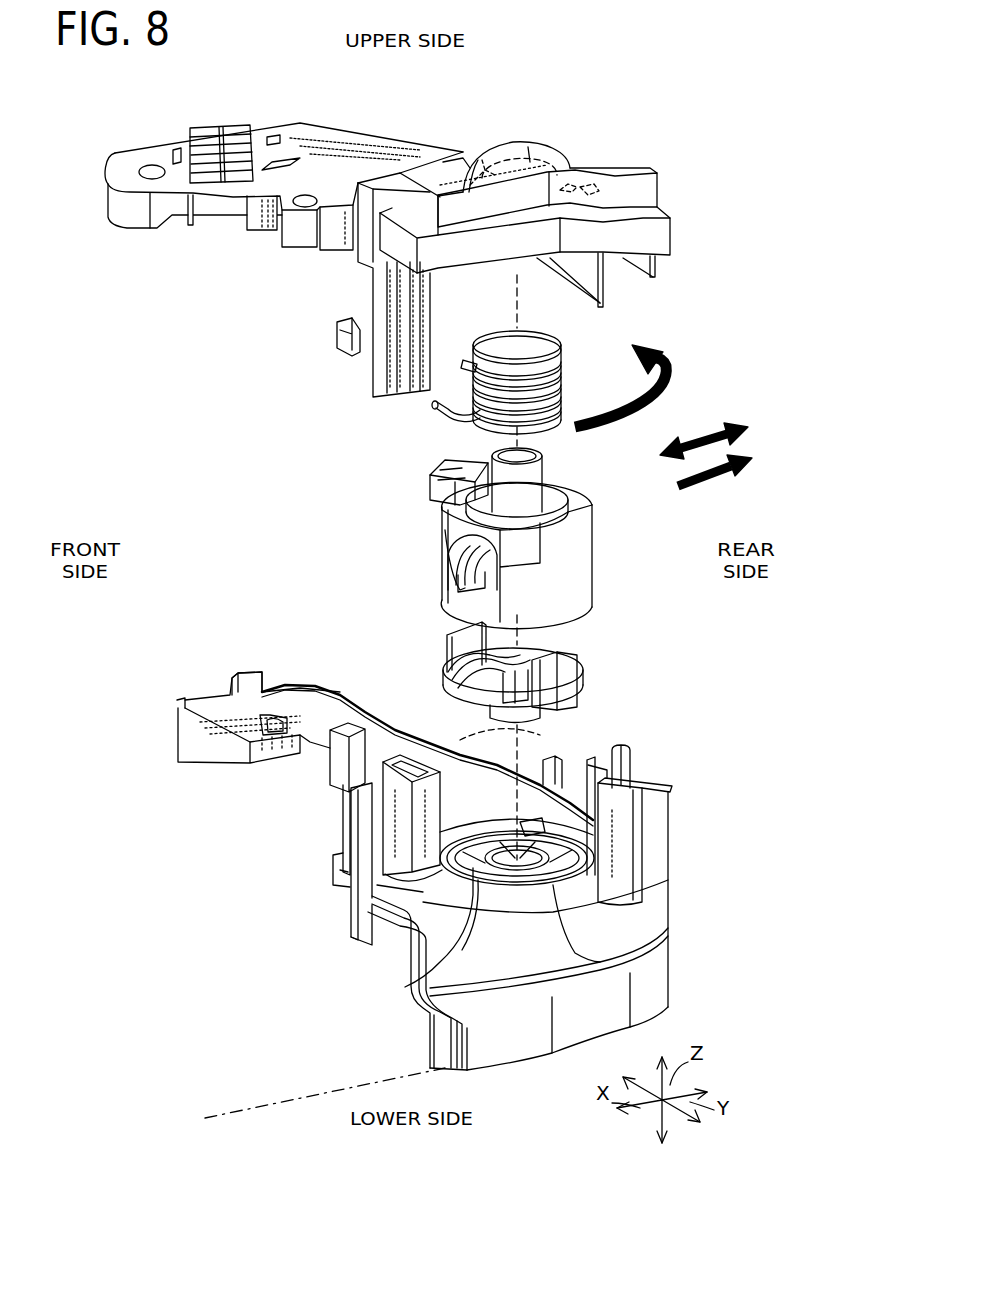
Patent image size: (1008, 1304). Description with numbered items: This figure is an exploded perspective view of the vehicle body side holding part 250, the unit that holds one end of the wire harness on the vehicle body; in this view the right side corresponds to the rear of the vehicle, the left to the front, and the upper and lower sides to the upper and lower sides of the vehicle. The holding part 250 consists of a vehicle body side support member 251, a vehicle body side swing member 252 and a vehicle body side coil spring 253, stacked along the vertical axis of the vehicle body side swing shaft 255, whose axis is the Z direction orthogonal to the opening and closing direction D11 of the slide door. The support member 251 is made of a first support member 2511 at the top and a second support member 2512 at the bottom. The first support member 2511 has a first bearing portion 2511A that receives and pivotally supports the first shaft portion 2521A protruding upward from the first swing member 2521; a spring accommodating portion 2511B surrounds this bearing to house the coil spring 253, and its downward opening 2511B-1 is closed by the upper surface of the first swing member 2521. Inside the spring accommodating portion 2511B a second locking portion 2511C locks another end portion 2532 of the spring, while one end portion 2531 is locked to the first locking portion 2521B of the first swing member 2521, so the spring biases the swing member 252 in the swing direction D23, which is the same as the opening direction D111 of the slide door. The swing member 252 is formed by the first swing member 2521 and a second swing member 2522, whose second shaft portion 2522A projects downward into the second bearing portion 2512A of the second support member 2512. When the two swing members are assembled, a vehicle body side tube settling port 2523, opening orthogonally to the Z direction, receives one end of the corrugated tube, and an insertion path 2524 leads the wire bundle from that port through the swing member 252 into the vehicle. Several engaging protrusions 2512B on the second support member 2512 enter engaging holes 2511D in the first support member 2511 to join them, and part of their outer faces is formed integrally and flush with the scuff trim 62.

The vehicle body side holding part 250 is at (676, 74).
The vehicle body side support member 251 is at (134, 404).
The first support member 2511 is at (133, 150).
The first bearing portion 2511A is at (530, 142).
The spring accommodating portion 2511B is at (480, 142).
The opening 2511B-1 is at (533, 282).
The second locking portion 2511C is at (460, 142).
The engaging holes 2511D is at (320, 166).
The second support member 2512 is at (168, 738).
The second bearing portion 2512A is at (468, 875).
The engaging protrusions 2512B is at (280, 722).
The vehicle body side swing member 252 is at (430, 556).
The first swing member 2521 is at (580, 548).
The first shaft portion 2521A is at (533, 470).
The first locking portion 2521B is at (430, 492).
The second swing member 2522 is at (568, 682).
The second shaft portion 2522A is at (523, 712).
The vehicle body side tube settling port 2523 is at (456, 604).
The insertion path 2524 is at (560, 641).
The vehicle body side coil spring 253 is at (542, 384).
The one end portion 2531 is at (430, 410).
The another end portion 2532 is at (470, 360).
The vehicle body side swing shaft 255 is at (493, 745).
The scuff trim 62 is at (290, 1103).
The opening and closing direction D11 is at (704, 432).
The opening direction D111 is at (713, 478).
The swing direction D23 is at (675, 380).